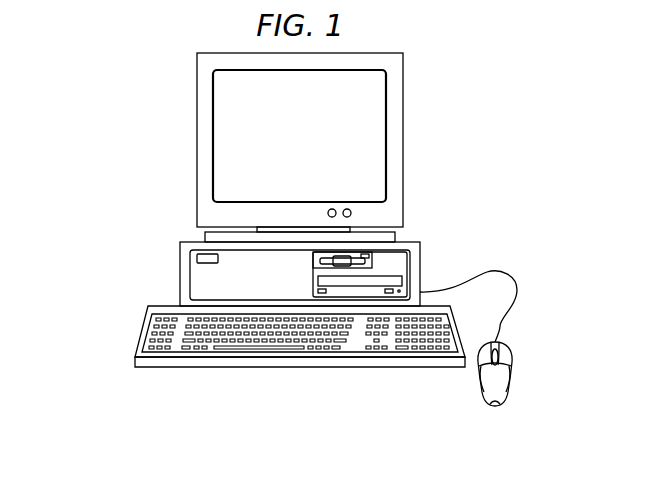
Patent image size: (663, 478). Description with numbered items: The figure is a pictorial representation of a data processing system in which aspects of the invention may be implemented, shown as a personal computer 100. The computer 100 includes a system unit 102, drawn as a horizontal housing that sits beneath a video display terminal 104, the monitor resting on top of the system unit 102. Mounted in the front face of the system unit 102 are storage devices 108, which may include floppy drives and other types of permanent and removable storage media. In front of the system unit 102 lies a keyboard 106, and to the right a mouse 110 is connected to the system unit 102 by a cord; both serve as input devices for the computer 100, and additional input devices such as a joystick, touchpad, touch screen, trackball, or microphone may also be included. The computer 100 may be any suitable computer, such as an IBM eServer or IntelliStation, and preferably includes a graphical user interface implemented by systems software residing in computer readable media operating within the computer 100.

The computer 100 is at (138, 76).
The system unit 102 is at (180, 272).
The video display terminal 104 is at (403, 142).
The keyboard 106 is at (258, 368).
The storage devices 108 is at (372, 266).
The mouse 110 is at (497, 407).